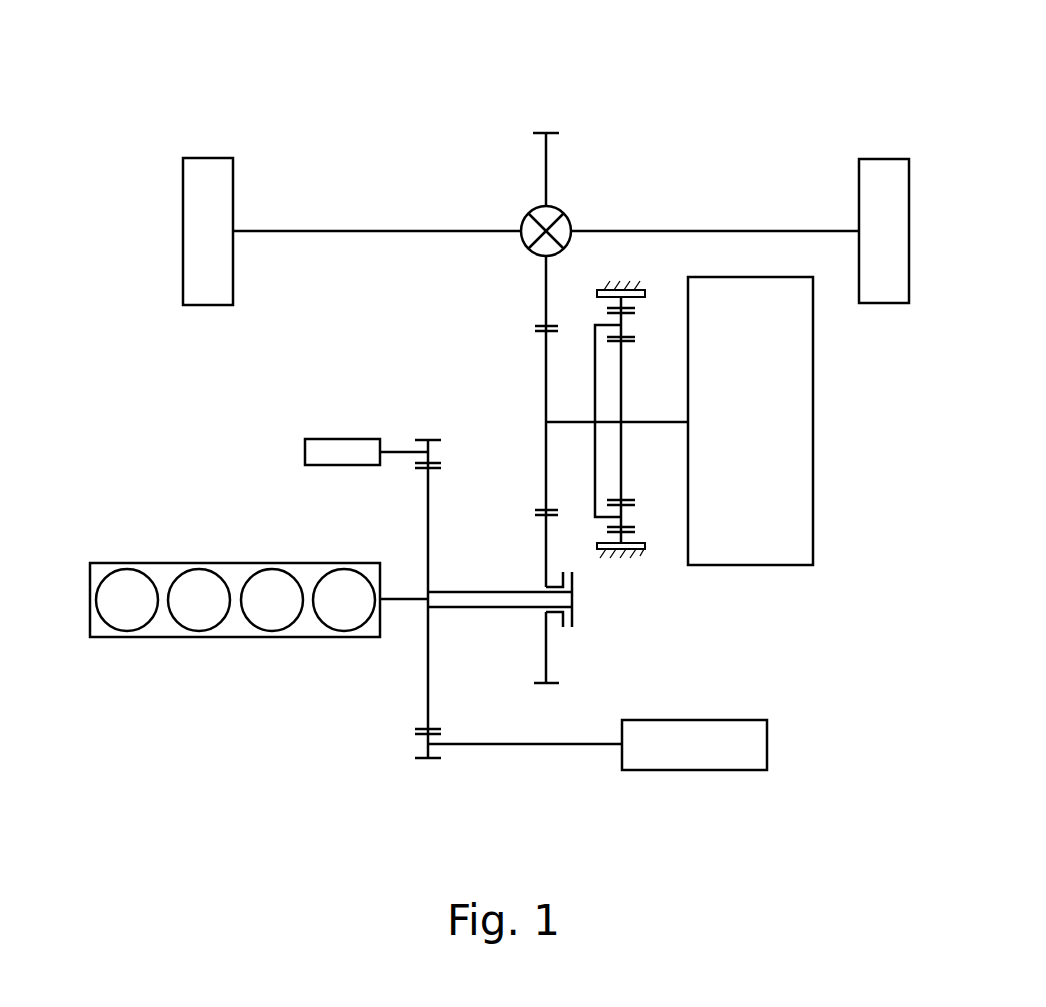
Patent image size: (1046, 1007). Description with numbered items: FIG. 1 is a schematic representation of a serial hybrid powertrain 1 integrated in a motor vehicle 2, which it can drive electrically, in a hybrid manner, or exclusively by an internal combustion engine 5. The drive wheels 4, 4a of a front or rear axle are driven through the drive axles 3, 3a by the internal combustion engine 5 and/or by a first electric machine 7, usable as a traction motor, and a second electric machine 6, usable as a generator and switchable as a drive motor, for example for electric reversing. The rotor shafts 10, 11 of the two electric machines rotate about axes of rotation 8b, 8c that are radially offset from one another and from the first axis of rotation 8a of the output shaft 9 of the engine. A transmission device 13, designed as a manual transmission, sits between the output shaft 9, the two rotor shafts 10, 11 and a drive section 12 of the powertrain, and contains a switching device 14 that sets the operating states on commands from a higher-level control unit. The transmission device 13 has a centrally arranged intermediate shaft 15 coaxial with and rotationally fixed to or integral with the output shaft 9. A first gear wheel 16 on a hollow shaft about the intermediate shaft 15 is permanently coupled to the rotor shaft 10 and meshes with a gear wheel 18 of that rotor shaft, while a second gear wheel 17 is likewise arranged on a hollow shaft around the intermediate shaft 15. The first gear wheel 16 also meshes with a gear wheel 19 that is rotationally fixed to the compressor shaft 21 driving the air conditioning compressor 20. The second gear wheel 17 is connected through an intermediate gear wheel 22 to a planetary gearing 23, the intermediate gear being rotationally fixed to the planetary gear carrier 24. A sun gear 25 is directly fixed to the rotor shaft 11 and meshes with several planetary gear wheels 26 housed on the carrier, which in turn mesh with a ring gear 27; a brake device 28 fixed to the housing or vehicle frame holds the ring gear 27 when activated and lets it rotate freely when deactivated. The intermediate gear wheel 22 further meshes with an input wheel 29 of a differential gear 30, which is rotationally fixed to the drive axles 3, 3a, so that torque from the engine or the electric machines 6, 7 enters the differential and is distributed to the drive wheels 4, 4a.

The serial hybrid powertrain 1 is at (278, 93).
The motor vehicle 2 is at (715, 88).
The drive axle 3 is at (331, 228).
The drive axle 3a is at (727, 228).
The drive wheel 4 is at (208, 231).
The drive wheel 4a is at (884, 231).
The internal combustion engine 5 is at (166, 625).
The second electric machine 6 is at (694, 745).
The first electric machine 7 is at (750, 421).
The first axis of rotation 8a is at (463, 644).
The axis of rotation 8b is at (525, 787).
The axis of rotation 8c is at (617, 393).
The output shaft 9 is at (410, 598).
The rotor shaft 10 is at (535, 746).
The rotor shaft 11 is at (672, 420).
The drive section 12 is at (540, 194).
The transmission device 13 is at (635, 425).
The switching device 14 is at (586, 600).
The intermediate shaft 15 is at (421, 608).
The first gear wheel 16 is at (430, 680).
The second gear wheel 17 is at (548, 650).
The gear wheel 18 is at (420, 736).
The gear wheel 19 is at (440, 457).
The air conditioning compressor 20 is at (343, 438).
The compressor shaft 21 is at (403, 450).
The intermediate gear wheel 22 is at (546, 353).
The planetary gearing 23 is at (628, 284).
The planetary gear carrier 24 is at (595, 367).
The sun gear 25 is at (621, 467).
The planetary gear wheels 26 is at (633, 510).
The ring gear 27 is at (630, 303).
The brake device 28 is at (648, 550).
The input wheel 29 is at (546, 297).
The differential gear 30 is at (523, 197).